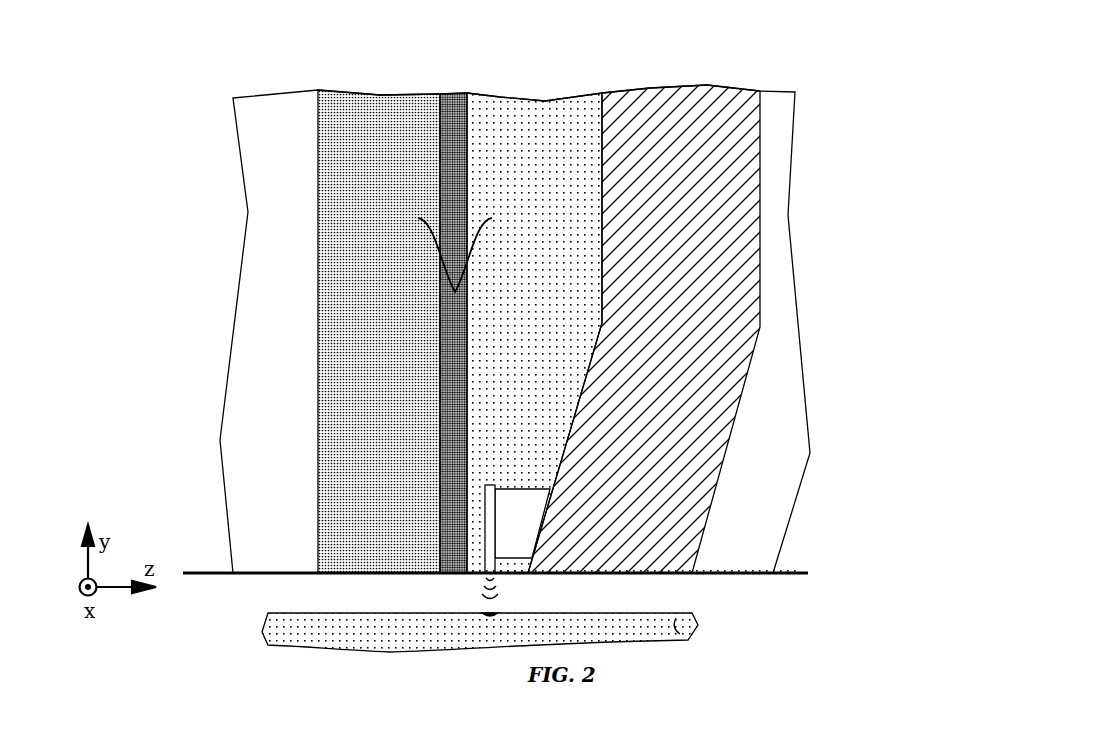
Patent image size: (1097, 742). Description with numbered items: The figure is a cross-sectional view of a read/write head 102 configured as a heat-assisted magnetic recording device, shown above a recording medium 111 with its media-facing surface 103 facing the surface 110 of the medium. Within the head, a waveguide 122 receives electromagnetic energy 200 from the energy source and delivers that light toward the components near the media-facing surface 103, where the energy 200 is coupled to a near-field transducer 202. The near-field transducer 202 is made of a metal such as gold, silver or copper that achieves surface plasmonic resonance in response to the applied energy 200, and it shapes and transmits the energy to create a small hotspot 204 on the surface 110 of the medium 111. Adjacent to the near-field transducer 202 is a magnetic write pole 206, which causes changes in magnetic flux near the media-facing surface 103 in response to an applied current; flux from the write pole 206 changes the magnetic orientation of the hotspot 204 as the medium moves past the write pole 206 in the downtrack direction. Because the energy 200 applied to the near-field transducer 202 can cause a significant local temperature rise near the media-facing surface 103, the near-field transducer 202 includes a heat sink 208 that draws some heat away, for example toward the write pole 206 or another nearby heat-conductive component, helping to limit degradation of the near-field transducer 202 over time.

The read/write head 102 is at (214, 62).
The media-facing surface 103 is at (800, 574).
The surface of medium 110 is at (648, 628).
The recording medium 111 is at (675, 632).
The waveguide 122 is at (595, 65).
The electromagnetic energy 200 is at (433, 247).
The near-field transducer 202 is at (488, 575).
The hotspot 204 is at (492, 627).
The magnetic write pole 206 is at (692, 86).
The heat sink 208 is at (512, 553).